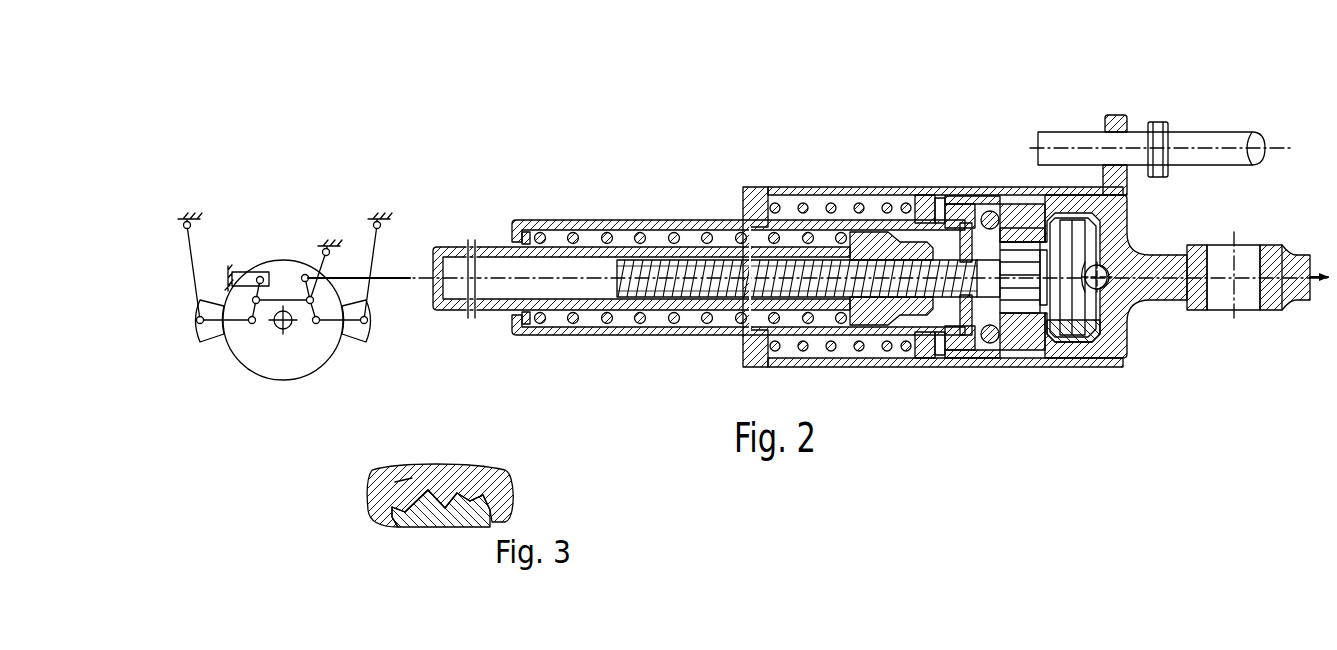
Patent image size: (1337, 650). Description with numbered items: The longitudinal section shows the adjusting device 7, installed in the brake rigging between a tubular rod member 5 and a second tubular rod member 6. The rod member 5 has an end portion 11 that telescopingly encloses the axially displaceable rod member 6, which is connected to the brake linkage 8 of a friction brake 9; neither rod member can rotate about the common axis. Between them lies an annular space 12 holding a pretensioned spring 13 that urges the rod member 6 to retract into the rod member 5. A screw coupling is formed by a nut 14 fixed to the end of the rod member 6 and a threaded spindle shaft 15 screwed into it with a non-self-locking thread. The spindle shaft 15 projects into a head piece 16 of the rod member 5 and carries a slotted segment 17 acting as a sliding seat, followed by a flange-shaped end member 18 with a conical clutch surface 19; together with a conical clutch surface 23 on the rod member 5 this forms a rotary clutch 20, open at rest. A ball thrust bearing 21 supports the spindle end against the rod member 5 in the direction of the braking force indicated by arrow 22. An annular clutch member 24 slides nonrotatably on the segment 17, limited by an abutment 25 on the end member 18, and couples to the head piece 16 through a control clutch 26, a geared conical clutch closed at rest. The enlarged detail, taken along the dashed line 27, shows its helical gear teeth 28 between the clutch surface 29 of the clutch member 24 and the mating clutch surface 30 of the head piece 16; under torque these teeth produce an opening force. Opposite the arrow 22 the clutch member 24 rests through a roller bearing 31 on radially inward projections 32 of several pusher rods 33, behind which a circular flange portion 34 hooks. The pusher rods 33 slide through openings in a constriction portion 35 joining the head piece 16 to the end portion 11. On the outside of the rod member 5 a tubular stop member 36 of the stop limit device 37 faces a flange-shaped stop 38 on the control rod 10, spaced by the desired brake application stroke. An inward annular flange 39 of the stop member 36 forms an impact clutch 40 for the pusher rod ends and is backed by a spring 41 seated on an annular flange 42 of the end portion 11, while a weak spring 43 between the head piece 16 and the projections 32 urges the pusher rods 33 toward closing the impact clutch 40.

In FIG. 2, the rod linkage member 5 is at (1157, 272).
In FIG. 2, the telescopingly adjustable rod linkage member 6 is at (450, 247).
In FIG. 2, the adjusting device 7 is at (778, 148).
In FIG. 2, the brake linkage 8 is at (400, 270).
In FIG. 2, the friction brake 9 is at (223, 352).
In FIG. 2, the control rod 10 is at (1240, 140).
In FIG. 2, the end portion 11 is at (638, 225).
In FIG. 2, the annular space 12 is at (540, 237).
In FIG. 2, the pretensioned spring 13 is at (565, 237).
In FIG. 2, the nut 14 is at (868, 322).
In FIG. 2, the threaded spindle shaft 15 is at (753, 305).
In FIG. 2, the head piece 16 is at (1100, 360).
In FIG. 3, the head piece 16 is at (432, 482).
In FIG. 2, the segment 17 is at (1032, 337).
In FIG. 2, the flange shaped end member 18 is at (1075, 312).
In FIG. 2, the conical clutch surface 19 is at (1053, 258).
In FIG. 2, the rotary clutch 20 is at (1062, 342).
In FIG. 2, the ball thrust bearing 21 is at (1103, 283).
In FIG. 2, the arrow 22 is at (1280, 277).
In FIG. 2, the conical clutch surface 23 is at (1058, 212).
In FIG. 2, the annular clutch member 24 is at (1022, 345).
In FIG. 3, the annular clutch member 24 is at (423, 517).
In FIG. 2, the stop or abutment 25 is at (1044, 345).
In FIG. 2, the control clutch 26 is at (1018, 330).
In FIG. 2, the dashed line 27 is at (1033, 215).
In FIG. 3, the helical gear teeth 28 is at (455, 500).
In FIG. 3, the clutch surface 29 is at (470, 500).
In FIG. 3, the mating clutch surface 30 is at (410, 478).
In FIG. 2, the roller bearing 31 is at (1000, 212).
In FIG. 2, the radially inwardly projections 32 is at (983, 205).
In FIG. 2, the pusher rods 33 is at (937, 194).
In FIG. 2, the circular flange portion 34 is at (968, 205).
In FIG. 2, the necked-down or constriction portion 35 is at (950, 350).
In FIG. 2, the tubular stop member 36 is at (860, 190).
In FIG. 2, the stop limit device 37 is at (1138, 118).
In FIG. 2, the flange shaped stop 38 is at (1160, 140).
In FIG. 2, the annular radially inwardly extending flange 39 is at (915, 203).
In FIG. 2, the impact clutch 40 is at (922, 200).
In FIG. 2, the spring 41 is at (800, 204).
In FIG. 2, the annular flange 42 is at (750, 190).
In FIG. 2, the small spring 43 is at (988, 352).